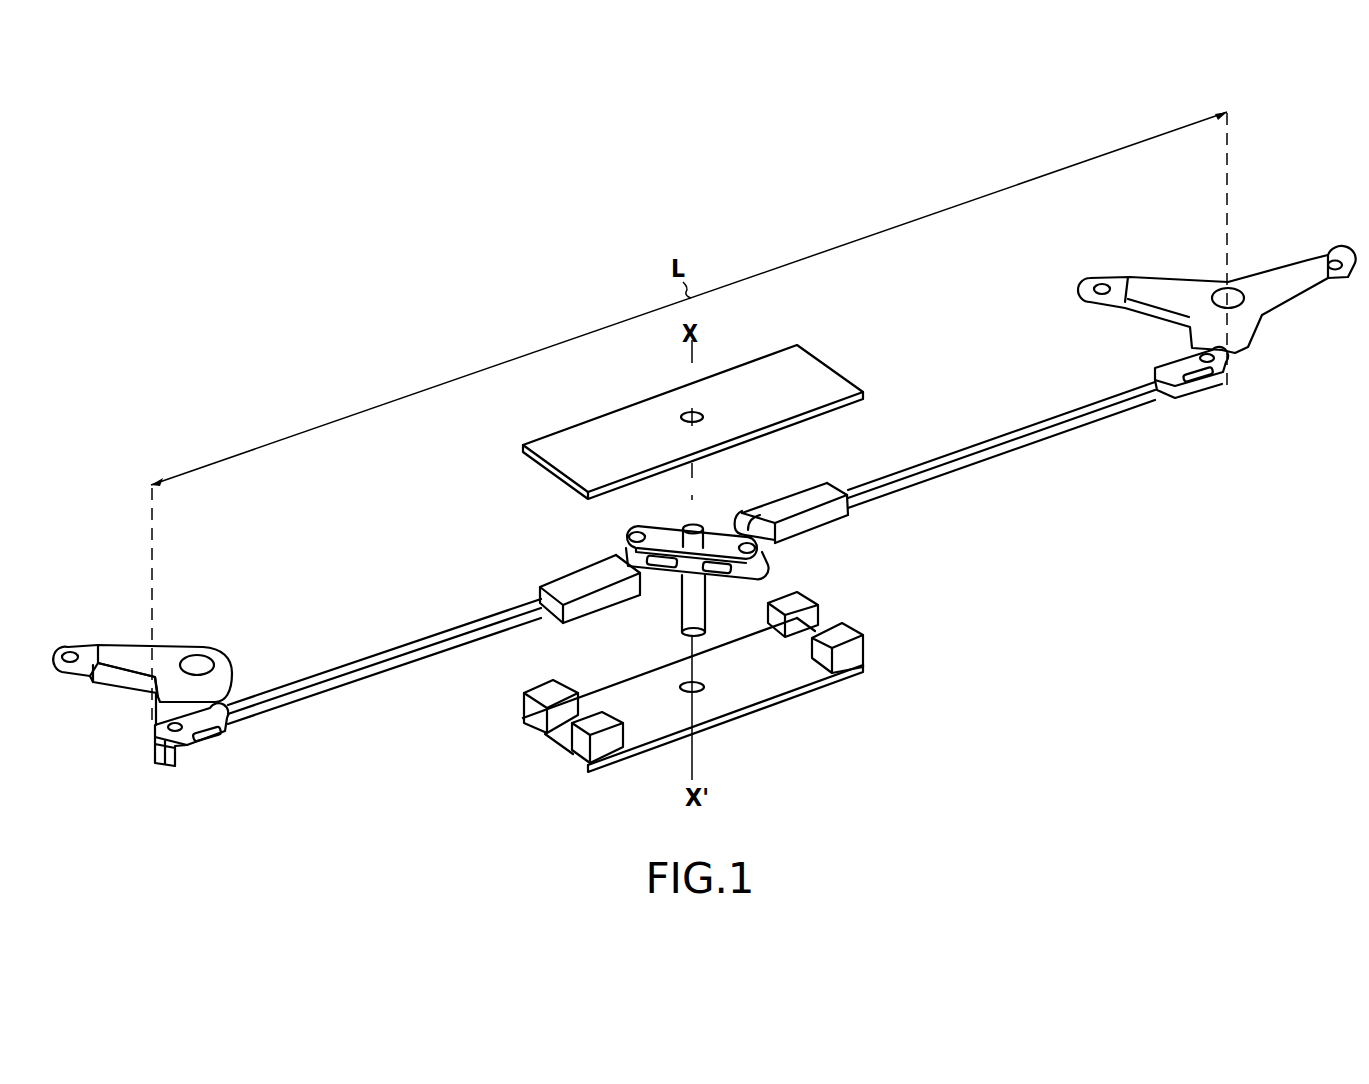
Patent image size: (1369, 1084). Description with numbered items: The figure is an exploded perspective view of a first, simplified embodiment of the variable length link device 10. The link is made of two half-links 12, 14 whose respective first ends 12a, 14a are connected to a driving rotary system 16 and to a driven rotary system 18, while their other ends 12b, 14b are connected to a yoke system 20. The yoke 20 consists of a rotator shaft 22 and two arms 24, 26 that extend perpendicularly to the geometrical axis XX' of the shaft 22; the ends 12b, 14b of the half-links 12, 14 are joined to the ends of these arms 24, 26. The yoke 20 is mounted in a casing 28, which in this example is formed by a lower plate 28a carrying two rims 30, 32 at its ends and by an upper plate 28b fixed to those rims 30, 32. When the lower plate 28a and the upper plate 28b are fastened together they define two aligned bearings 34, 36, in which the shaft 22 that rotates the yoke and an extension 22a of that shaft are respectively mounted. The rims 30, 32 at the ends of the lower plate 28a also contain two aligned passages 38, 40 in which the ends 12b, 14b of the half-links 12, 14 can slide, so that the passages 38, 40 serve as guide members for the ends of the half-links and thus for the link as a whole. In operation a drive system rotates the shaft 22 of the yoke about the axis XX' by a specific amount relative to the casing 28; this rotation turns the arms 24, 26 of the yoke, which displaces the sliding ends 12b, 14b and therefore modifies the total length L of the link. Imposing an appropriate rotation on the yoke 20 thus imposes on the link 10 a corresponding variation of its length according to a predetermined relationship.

The variable length link device 10 is at (950, 560).
The half-link 12 is at (992, 443).
The first end of half-link 12a is at (1193, 396).
The end of half-link 12b is at (802, 527).
The half-link 14 is at (387, 647).
The first end of half-link 14a is at (206, 750).
The end of half-link 14b is at (576, 612).
The driving rotary system 16 is at (1268, 277).
The driven rotary system 18 is at (124, 647).
The yoke system 20 is at (595, 533).
The rotator shaft 22 is at (683, 615).
The shaft extension 22a is at (697, 527).
The arm 24 is at (663, 535).
The arm 26 is at (767, 529).
The casing 28 is at (792, 717).
The lower plate 28a is at (819, 677).
The upper plate 28b is at (753, 373).
The rim 30 is at (857, 647).
The rim 32 is at (577, 752).
The bearing 34 is at (705, 687).
The bearing 36 is at (681, 412).
The passage 38 is at (827, 624).
The passage 40 is at (549, 748).